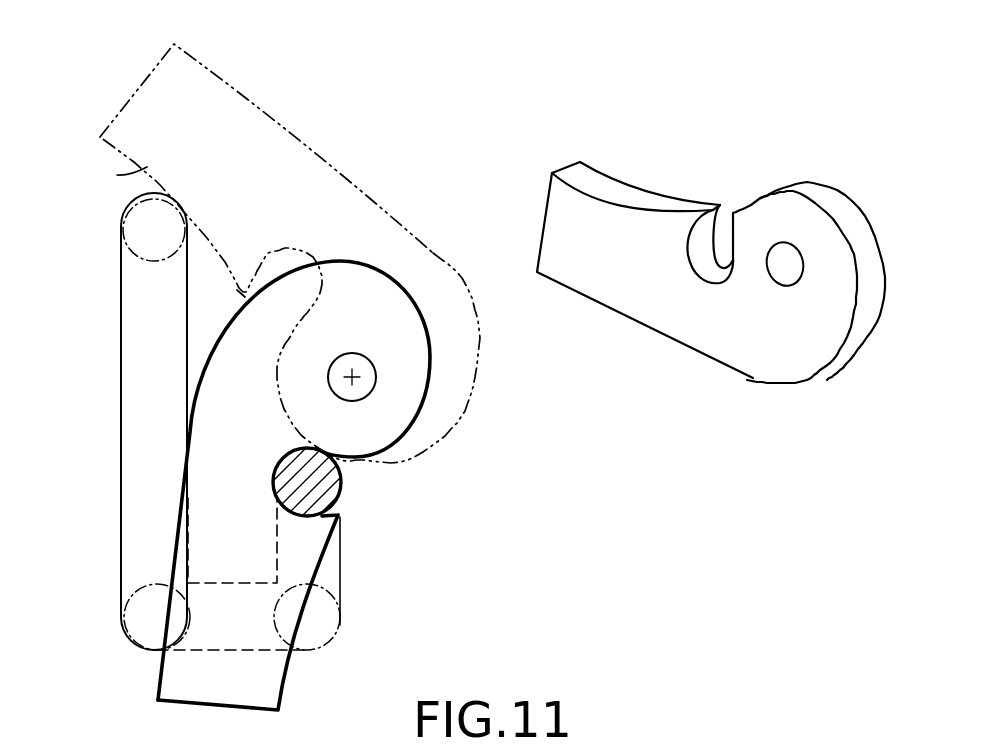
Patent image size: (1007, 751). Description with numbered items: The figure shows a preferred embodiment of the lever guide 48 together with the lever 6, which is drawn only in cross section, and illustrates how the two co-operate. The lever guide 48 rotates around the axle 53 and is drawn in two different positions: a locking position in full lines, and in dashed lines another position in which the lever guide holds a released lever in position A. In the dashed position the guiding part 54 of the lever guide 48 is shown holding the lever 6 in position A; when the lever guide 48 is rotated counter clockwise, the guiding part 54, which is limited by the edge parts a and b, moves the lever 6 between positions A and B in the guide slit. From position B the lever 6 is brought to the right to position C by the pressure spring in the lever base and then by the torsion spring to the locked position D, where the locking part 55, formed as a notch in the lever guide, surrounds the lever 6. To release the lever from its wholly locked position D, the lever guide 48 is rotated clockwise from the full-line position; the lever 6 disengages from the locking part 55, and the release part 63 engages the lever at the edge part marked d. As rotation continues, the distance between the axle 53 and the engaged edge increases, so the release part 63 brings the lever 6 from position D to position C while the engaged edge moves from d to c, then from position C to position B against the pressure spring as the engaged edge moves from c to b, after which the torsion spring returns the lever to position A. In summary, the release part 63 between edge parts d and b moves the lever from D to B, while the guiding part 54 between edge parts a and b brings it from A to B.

The lever guide 48 is at (338, 158).
The axle 53 is at (355, 379).
The guiding part 54 is at (110, 173).
The locking part 55 is at (270, 304).
The lever 6 is at (330, 482).
The release part 63 is at (863, 330).
The position A is at (127, 213).
The position B is at (135, 640).
The position C is at (333, 647).
The position D is at (282, 467).
The edge part a is at (280, 707).
The edge part b is at (227, 82).
The edge part c is at (318, 148).
The edge part d is at (417, 302).